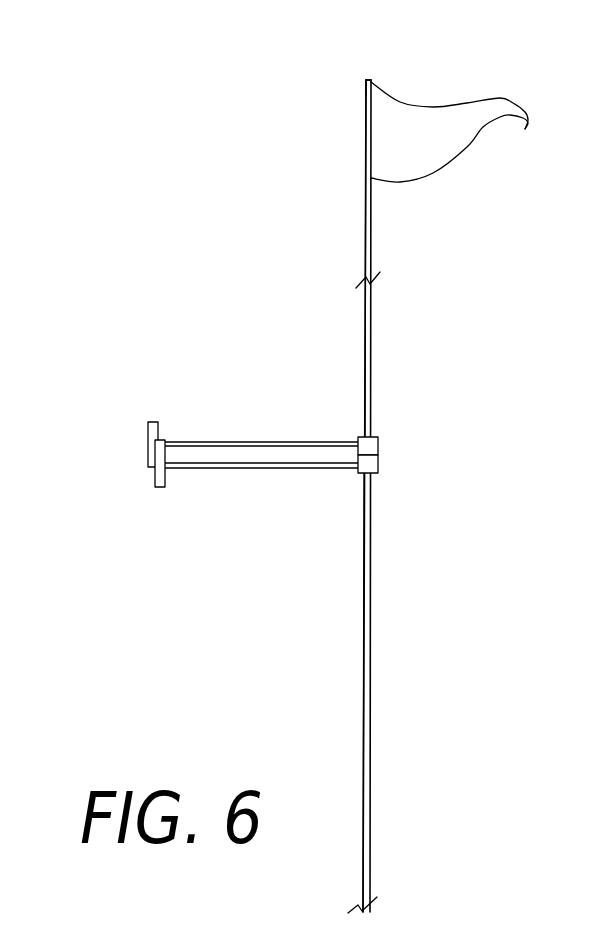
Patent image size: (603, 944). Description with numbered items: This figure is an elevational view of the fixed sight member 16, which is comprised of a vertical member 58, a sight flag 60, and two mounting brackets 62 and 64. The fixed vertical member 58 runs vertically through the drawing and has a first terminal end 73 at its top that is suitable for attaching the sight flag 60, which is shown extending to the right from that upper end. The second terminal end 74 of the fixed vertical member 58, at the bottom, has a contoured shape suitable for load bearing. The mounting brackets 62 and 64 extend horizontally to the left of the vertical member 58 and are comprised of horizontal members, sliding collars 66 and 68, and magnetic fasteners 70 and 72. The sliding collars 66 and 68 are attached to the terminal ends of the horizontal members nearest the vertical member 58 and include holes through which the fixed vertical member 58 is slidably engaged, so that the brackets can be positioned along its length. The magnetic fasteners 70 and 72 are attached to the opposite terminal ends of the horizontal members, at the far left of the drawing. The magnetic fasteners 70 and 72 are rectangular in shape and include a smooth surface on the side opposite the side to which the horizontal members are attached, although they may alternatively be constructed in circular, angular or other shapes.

The fixed sight member 16 is at (394, 695).
The vertical member 58 is at (372, 322).
The sight flag 60 is at (489, 99).
The mounting bracket 62 is at (264, 442).
The mounting bracket 64 is at (220, 468).
The sliding collar 66 is at (376, 447).
The sliding collar 68 is at (379, 469).
The magnetic fastener 70 is at (153, 422).
The magnetic fastener 72 is at (158, 487).
The first terminal end 73 is at (364, 92).
The second terminal end 74 is at (372, 825).